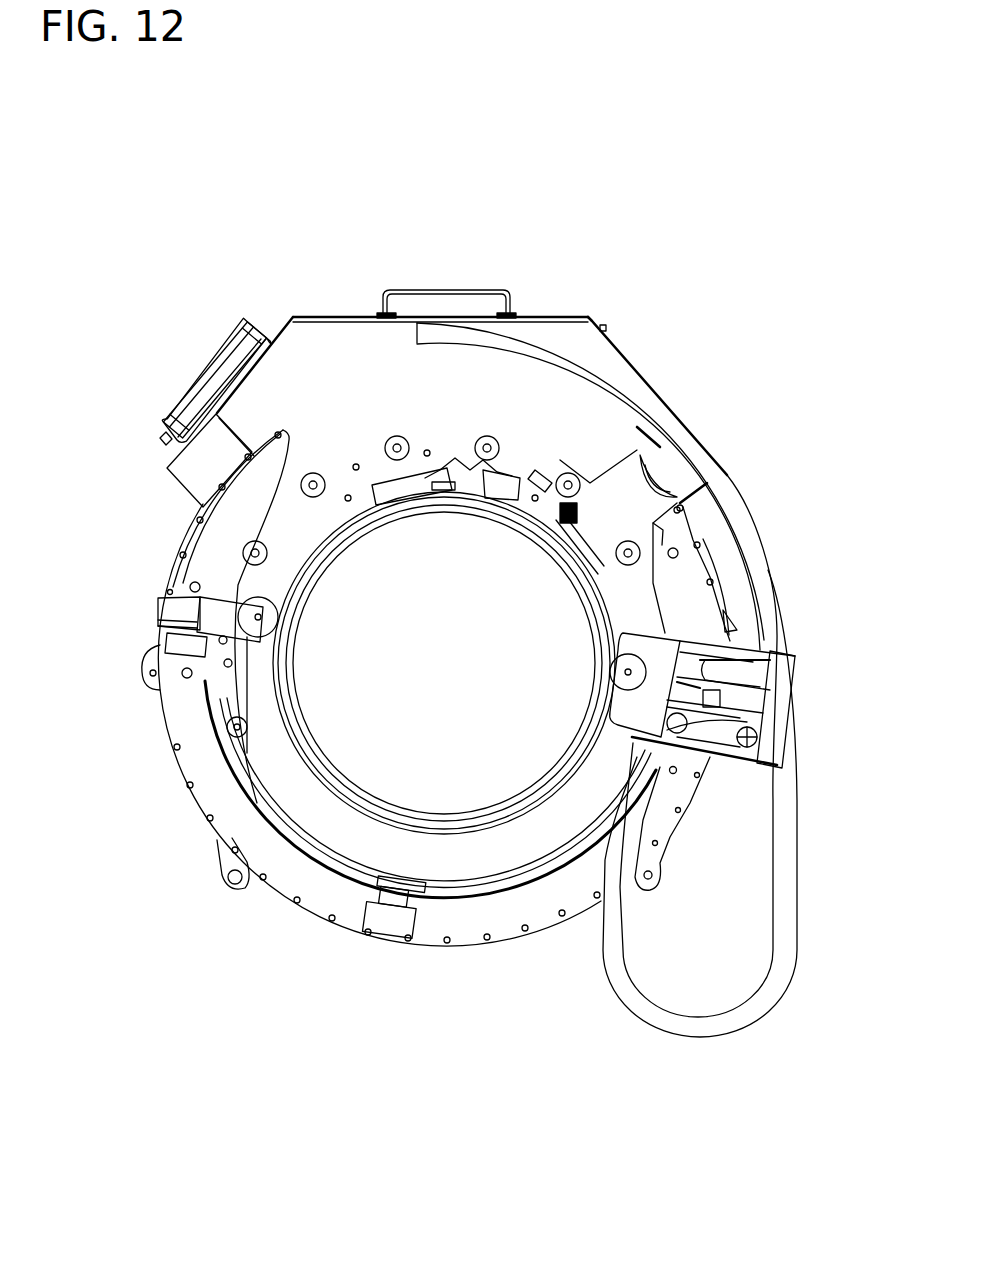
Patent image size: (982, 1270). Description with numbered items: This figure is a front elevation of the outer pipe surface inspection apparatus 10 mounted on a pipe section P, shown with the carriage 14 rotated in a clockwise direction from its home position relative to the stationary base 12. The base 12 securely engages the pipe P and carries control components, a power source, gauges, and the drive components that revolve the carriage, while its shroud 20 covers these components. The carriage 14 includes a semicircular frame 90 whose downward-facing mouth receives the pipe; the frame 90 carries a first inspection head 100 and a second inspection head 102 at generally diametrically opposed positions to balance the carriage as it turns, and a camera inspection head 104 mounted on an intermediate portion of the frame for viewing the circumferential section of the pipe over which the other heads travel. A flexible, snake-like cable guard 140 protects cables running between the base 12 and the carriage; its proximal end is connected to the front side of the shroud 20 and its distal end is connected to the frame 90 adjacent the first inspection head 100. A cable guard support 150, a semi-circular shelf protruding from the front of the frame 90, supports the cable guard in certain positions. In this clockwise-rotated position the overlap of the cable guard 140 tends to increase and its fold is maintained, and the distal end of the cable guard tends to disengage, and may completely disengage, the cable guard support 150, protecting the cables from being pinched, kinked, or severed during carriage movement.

The outer pipe surface inspection apparatus 10 is at (702, 160).
The stationary base 12 is at (602, 303).
The carriage 14 is at (295, 975).
The shroud 20 is at (363, 317).
The semicircular frame 90 is at (472, 952).
The first inspection head 100 is at (805, 667).
The second inspection head 102 is at (202, 636).
The camera inspection head 104 is at (383, 940).
The cable guard 140 is at (757, 1027).
The cable guard support 150 is at (250, 812).
The pipe section P is at (511, 816).